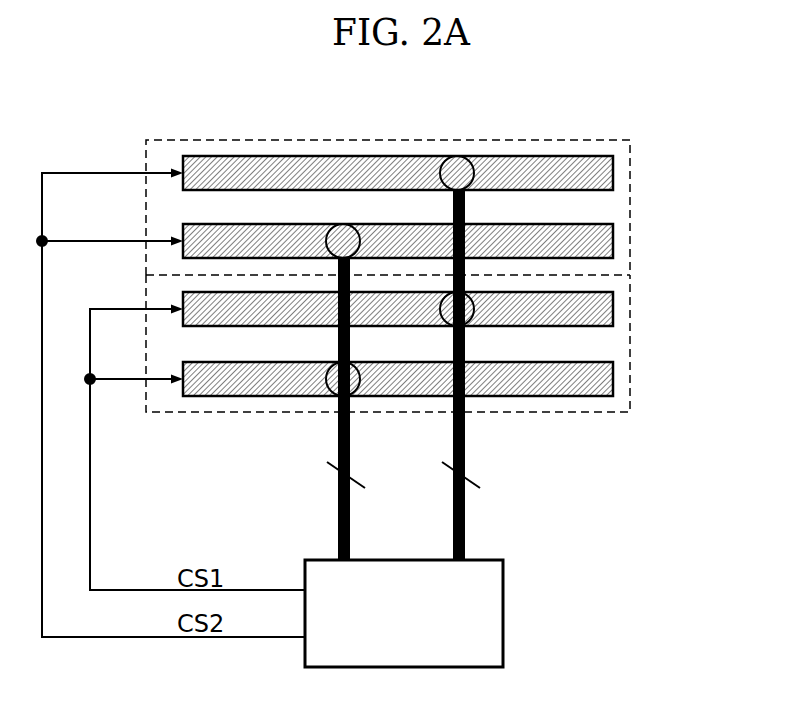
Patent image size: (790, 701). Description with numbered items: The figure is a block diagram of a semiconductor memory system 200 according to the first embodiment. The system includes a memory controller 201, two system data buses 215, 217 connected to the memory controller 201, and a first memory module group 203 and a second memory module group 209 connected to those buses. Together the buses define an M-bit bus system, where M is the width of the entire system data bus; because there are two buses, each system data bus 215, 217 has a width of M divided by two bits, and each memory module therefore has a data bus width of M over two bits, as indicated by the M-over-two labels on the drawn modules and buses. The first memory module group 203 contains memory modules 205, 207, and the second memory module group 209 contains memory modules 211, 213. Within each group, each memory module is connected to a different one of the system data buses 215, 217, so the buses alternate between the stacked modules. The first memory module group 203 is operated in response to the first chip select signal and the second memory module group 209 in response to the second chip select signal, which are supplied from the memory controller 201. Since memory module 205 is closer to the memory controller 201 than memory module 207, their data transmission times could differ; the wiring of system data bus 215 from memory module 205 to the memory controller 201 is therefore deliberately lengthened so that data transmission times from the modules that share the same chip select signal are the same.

The semiconductor memory system 200 is at (429, 263).
The memory controller 201 is at (503, 616).
The first memory module group 203 is at (423, 374).
The memory module 205 is at (613, 386).
The memory module 207 is at (613, 316).
The second memory module group 209 is at (423, 194).
The memory module 211 is at (613, 180).
The memory module 213 is at (613, 248).
The system data bus 215 is at (338, 526).
The system data bus 217 is at (466, 526).